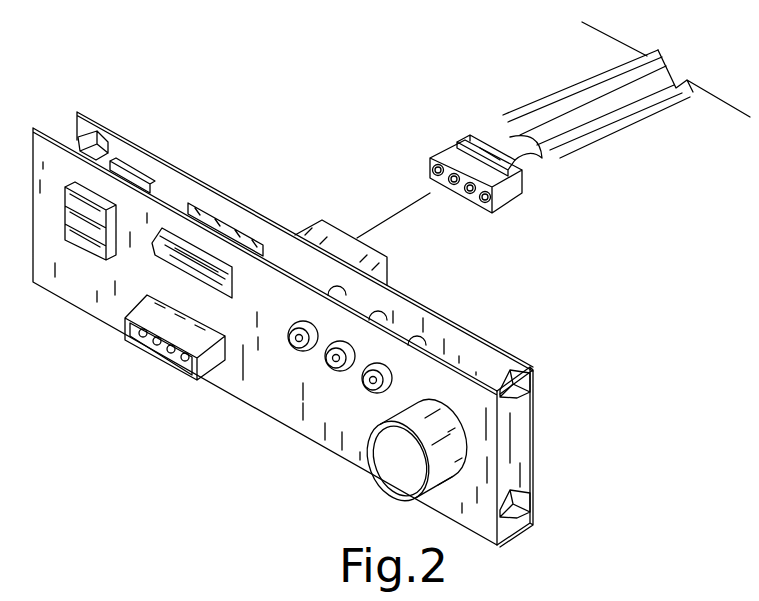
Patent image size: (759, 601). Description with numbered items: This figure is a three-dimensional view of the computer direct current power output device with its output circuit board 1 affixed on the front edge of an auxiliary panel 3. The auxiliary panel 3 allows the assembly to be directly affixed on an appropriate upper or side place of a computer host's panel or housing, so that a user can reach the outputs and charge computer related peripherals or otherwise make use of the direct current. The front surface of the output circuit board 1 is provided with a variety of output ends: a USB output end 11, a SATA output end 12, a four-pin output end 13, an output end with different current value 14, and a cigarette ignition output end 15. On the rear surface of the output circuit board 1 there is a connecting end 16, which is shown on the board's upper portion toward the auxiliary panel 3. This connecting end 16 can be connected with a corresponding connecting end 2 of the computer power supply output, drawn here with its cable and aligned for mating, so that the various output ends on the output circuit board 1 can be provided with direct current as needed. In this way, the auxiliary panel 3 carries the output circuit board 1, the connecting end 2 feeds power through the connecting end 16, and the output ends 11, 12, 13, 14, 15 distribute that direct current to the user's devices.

The output circuit board 1 is at (230, 198).
The connecting end of the computer power supply output 2 is at (448, 148).
The auxiliary panel 3 is at (275, 263).
The USB output end 11 is at (73, 242).
The SATA output end 12 is at (163, 230).
The 4P output end 13 is at (153, 347).
The output end with different current value 14 is at (293, 350).
The cigarette ignition output end 15 is at (381, 456).
The connecting end 16 is at (333, 237).